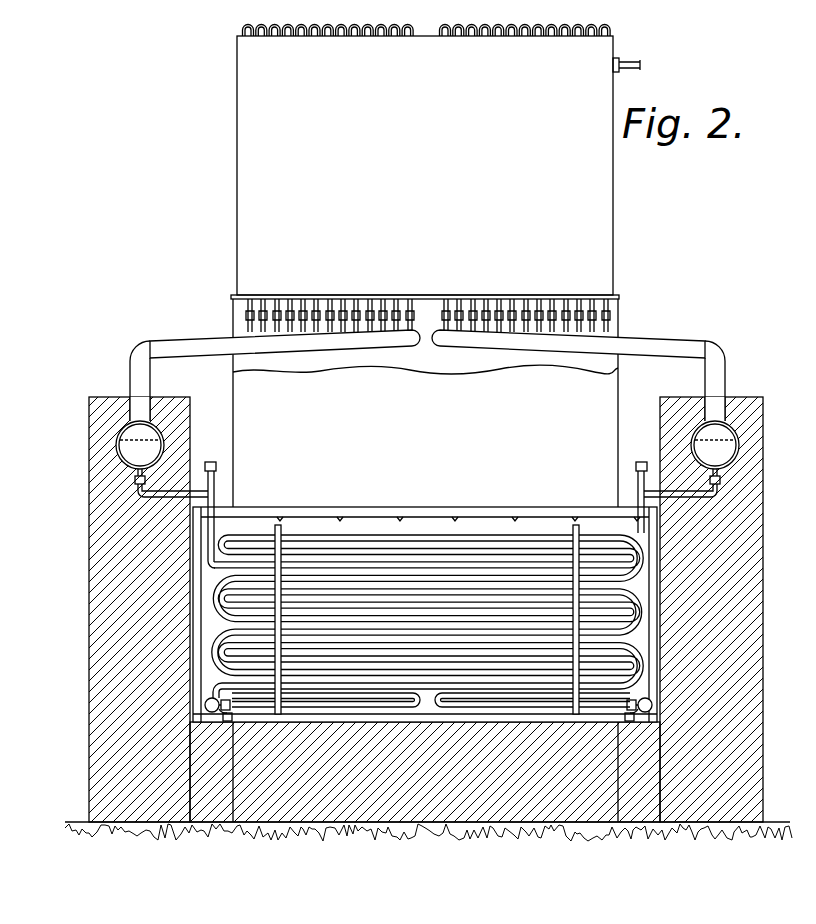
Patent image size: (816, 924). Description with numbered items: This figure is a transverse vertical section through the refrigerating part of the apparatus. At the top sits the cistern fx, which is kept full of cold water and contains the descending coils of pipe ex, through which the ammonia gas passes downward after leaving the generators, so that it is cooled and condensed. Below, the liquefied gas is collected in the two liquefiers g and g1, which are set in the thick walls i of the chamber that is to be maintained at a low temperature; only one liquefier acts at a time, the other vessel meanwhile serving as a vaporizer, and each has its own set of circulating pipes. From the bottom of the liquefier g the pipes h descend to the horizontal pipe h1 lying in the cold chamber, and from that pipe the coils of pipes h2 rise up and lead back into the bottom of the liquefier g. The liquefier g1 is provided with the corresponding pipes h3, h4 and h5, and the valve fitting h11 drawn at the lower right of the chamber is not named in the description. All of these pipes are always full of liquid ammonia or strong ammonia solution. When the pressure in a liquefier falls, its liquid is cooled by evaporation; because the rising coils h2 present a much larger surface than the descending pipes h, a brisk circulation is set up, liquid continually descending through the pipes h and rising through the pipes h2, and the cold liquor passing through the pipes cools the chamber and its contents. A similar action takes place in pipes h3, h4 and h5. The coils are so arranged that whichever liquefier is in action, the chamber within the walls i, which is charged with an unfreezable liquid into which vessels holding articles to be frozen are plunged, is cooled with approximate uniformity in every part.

The cistern fx is at (435, 162).
The coils of pipe ex is at (248, 314).
The liquefier g is at (140, 440).
The liquefier g1 is at (715, 440).
The pipes h is at (214, 568).
The horizontal pipe h1 is at (206, 708).
The valve h'' h11 is at (650, 712).
The coils of pipes h2 is at (214, 498).
The pipes h3 is at (648, 538).
The pipes h4 is at (430, 648).
The pipes h5 is at (640, 490).
The walls of the chamber i is at (426, 609).